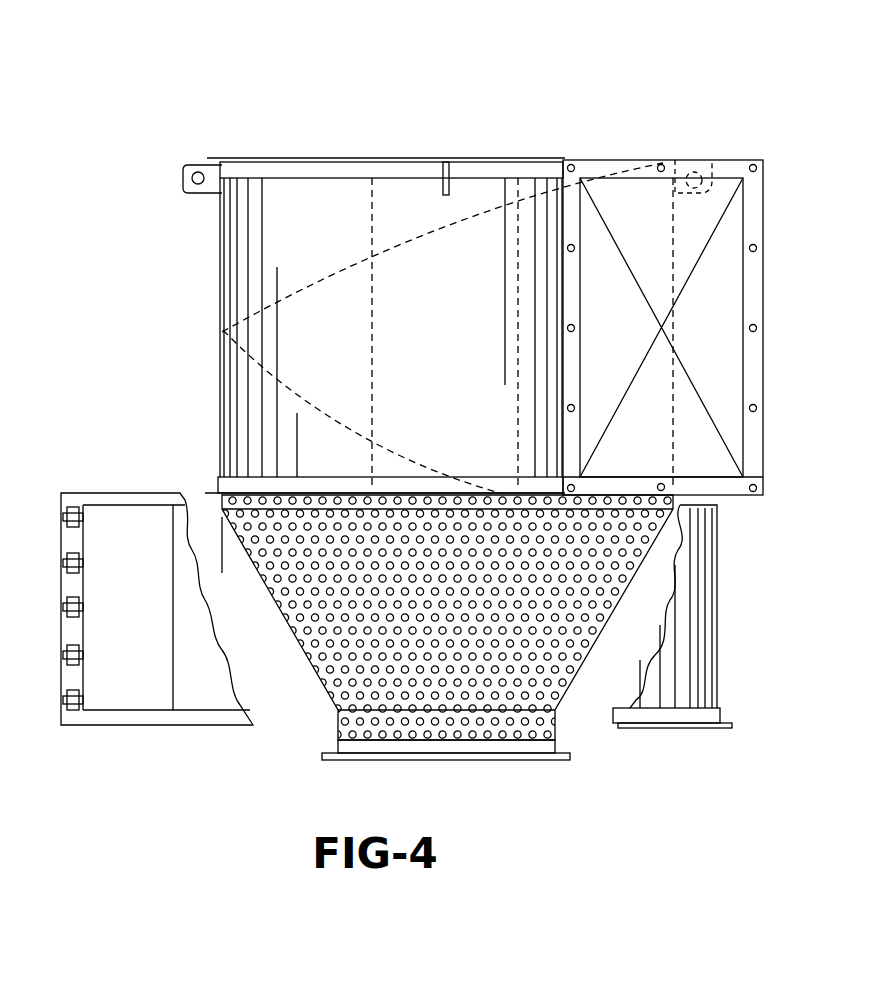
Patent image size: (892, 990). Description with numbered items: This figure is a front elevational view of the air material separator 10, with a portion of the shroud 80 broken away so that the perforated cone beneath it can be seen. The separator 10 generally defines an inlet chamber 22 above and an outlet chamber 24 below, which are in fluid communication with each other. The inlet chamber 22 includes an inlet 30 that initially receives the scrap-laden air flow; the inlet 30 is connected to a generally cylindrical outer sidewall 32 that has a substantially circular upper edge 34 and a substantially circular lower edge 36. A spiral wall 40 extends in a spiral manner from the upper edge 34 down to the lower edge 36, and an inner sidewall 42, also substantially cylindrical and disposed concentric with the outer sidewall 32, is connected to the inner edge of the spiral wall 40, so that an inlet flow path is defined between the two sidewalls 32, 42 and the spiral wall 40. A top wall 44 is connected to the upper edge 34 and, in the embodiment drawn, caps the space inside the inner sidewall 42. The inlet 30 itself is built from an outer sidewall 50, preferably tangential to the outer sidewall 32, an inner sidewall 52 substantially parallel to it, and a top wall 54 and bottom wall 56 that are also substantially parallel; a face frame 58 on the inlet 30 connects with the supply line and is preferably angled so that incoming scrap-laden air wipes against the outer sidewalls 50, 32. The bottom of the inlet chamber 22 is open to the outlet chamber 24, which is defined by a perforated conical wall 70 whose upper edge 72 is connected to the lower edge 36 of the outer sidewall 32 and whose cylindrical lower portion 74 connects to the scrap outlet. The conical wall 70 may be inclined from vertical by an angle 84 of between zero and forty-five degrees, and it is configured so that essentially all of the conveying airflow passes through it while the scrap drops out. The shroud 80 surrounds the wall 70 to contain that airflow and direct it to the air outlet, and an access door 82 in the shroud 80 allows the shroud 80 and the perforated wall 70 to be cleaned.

The air material separator 10 is at (441, 436).
The inlet chamber 22 is at (394, 298).
The outlet chamber 24 is at (134, 598).
The inlet 30 is at (681, 305).
The outer sidewall 32 is at (268, 347).
The upper edge 34 is at (282, 160).
The lower edge 36 is at (258, 492).
The spiral wall 40 is at (268, 378).
The inner sidewall 42 is at (372, 203).
The top wall 44 is at (417, 160).
The outer sidewall 50 is at (710, 292).
The inner sidewall 52 is at (580, 213).
The top wall 54 is at (642, 178).
The bottom wall 56 is at (720, 478).
The face frame 58 is at (753, 193).
The perforated conical wall 70 is at (500, 650).
The upper edge 72 is at (645, 495).
The cylindrical lower portion 74 is at (528, 705).
The shroud 80 is at (212, 692).
The access door 82 is at (80, 626).
The angle 84 is at (216, 557).